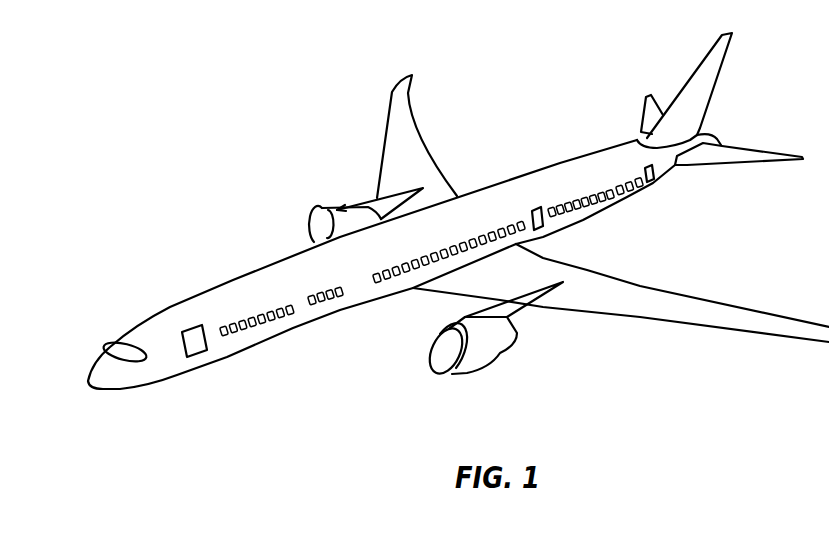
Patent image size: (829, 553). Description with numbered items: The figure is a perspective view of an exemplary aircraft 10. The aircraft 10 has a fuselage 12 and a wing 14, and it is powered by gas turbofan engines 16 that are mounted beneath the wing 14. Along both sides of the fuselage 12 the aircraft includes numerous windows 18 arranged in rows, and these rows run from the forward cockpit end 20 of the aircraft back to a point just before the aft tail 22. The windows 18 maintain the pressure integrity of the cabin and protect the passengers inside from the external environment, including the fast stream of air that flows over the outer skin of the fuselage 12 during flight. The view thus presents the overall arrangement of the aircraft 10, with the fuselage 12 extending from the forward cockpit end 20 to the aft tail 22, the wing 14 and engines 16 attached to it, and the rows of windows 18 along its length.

The aircraft 10 is at (268, 129).
The fuselage 12 is at (253, 280).
The wing 14 is at (415, 135).
The gas turbofan engines 16 is at (327, 210).
The windows 18 is at (337, 300).
The forward cockpit end 20 is at (142, 327).
The aft tail 22 is at (705, 133).